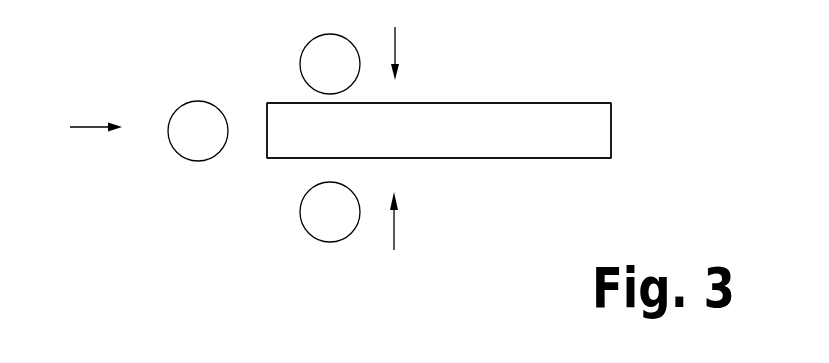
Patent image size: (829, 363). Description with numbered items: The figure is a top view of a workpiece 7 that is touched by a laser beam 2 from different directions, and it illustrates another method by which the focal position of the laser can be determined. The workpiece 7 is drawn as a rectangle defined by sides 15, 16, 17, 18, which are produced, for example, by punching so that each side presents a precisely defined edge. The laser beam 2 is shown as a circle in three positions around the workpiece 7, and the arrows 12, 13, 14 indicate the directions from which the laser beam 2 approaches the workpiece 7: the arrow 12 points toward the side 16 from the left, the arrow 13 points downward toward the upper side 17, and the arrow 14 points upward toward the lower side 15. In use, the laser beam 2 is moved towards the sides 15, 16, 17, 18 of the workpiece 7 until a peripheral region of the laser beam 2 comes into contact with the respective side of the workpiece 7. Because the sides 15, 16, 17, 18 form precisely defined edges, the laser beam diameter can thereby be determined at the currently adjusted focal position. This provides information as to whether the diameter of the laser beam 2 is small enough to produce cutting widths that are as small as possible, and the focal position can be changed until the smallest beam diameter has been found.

The laser beam 2 is at (203, 110).
The workpiece 7 is at (508, 125).
The arrow 12 is at (89, 126).
The arrow 13 is at (397, 40).
The arrow 14 is at (396, 237).
The side 15 is at (335, 157).
The side 16 is at (268, 142).
The side 17 is at (433, 105).
The side 18 is at (611, 130).